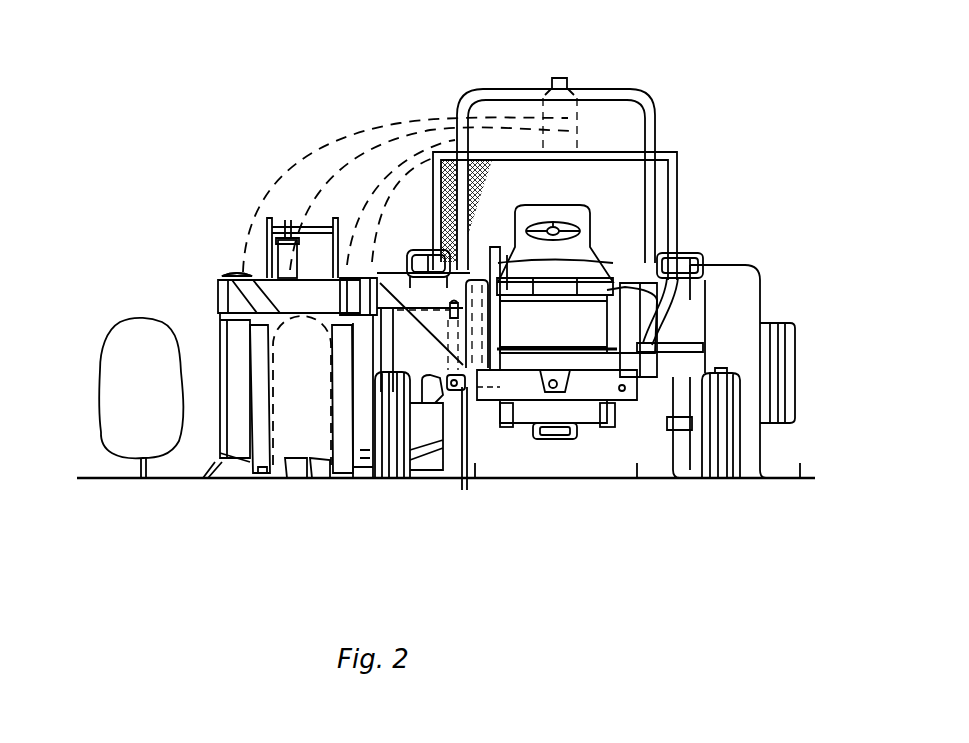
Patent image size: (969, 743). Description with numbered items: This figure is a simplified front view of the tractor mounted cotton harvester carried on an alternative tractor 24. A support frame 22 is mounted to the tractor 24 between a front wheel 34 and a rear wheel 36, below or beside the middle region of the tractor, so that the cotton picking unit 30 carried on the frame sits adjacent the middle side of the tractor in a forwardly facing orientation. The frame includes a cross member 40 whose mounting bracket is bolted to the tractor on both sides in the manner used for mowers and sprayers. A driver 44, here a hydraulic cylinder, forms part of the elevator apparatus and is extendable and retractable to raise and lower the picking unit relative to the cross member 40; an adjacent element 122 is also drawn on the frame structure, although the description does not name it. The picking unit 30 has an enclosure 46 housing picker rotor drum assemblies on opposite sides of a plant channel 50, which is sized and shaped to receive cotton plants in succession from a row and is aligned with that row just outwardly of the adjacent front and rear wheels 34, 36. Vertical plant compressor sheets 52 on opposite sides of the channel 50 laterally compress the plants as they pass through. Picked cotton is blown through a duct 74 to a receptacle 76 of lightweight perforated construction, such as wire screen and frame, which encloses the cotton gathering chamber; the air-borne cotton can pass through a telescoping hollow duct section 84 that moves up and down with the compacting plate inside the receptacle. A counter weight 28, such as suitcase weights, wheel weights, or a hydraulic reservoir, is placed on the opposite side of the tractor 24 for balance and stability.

The tractor 24 is at (796, 102).
The duct 74 is at (358, 196).
The telescoping hollow duct section 84 is at (578, 133).
The receptacle 76 is at (680, 166).
The hydraulic cylinder 122 is at (445, 270).
The enclosure 46 is at (217, 303).
The driver 44 is at (435, 355).
The cross member 40 is at (422, 405).
The support frame 22 is at (460, 459).
The rear wheel 36 is at (752, 270).
The counter weight 28 is at (797, 340).
The front wheel 34 is at (395, 480).
The cotton picking unit 30 is at (223, 458).
The plant compressor sheets 52 is at (262, 462).
The plant channel 50 is at (316, 427).